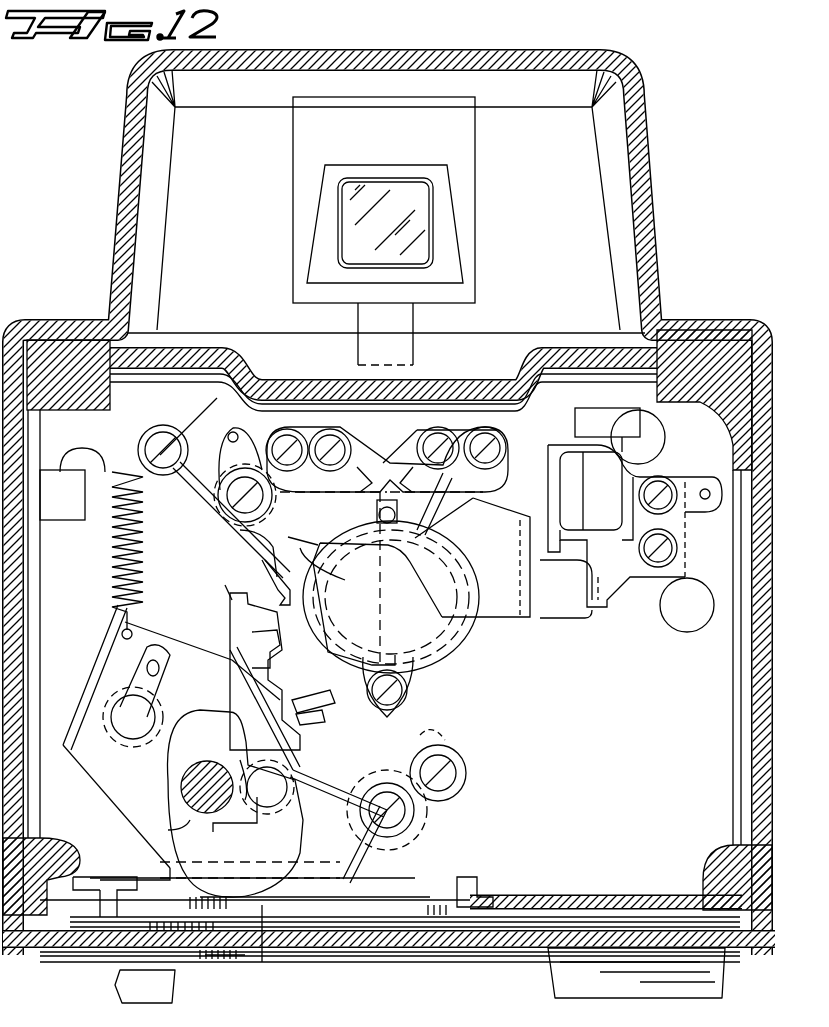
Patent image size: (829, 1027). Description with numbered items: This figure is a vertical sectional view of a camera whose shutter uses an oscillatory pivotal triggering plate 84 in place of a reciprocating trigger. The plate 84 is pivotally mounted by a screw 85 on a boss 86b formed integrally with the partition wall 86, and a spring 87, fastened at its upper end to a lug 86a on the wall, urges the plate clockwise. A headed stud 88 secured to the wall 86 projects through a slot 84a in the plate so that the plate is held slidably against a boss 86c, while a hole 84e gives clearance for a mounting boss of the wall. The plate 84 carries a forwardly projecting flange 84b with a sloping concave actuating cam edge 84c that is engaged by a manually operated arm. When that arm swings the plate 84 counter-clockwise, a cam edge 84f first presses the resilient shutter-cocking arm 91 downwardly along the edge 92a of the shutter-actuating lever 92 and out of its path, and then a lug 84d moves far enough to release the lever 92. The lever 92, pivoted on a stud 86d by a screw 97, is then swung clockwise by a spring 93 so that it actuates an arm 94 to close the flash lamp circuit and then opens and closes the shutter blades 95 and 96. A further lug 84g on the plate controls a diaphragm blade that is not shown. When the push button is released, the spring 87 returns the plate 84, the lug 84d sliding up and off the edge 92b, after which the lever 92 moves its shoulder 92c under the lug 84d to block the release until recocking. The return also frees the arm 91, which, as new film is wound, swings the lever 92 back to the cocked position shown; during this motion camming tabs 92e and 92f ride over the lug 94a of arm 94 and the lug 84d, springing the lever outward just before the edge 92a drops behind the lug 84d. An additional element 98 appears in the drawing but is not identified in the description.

The triggering plate 84 is at (430, 712).
The slot 84a is at (170, 630).
The forwardly projecting flange 84b is at (93, 705).
The actuating cam edge 84c is at (112, 665).
The lug 84d is at (328, 716).
The hole 84e is at (170, 822).
The cam edge 84f is at (222, 960).
The lug 84g is at (245, 828).
The screw 85 is at (462, 780).
The partition wall 86 is at (537, 850).
The lug 86a is at (72, 507).
The boss 86b is at (440, 735).
The boss 86c is at (118, 770).
The stud 86d is at (243, 758).
The spring 87 is at (146, 530).
The headed stud 88 is at (90, 760).
The shutter-cocking arm 91 is at (264, 962).
The shutter-actuating lever 92 is at (230, 700).
The edge 92a is at (360, 642).
The edge 92b is at (300, 716).
The shoulder 92c is at (232, 678).
The camming tab 92e is at (228, 600).
The camming tab 92f is at (276, 636).
The spring 93 is at (337, 778).
The arm 94 is at (520, 625).
The lug 94a is at (272, 590).
The shutter blade 95 is at (318, 548).
The shutter blade 96 is at (455, 622).
The screw 97 is at (263, 810).
The aperture 98 is at (183, 787).